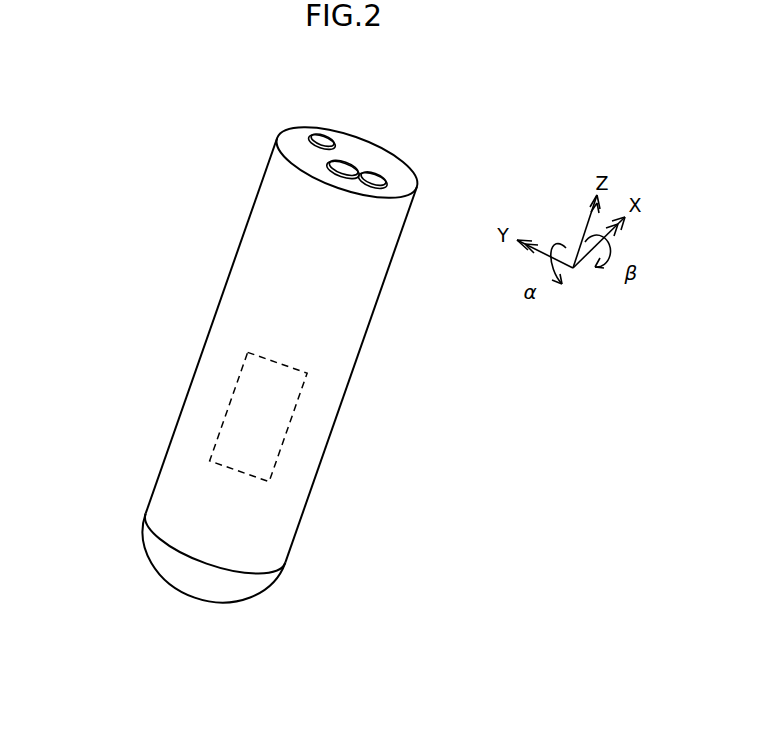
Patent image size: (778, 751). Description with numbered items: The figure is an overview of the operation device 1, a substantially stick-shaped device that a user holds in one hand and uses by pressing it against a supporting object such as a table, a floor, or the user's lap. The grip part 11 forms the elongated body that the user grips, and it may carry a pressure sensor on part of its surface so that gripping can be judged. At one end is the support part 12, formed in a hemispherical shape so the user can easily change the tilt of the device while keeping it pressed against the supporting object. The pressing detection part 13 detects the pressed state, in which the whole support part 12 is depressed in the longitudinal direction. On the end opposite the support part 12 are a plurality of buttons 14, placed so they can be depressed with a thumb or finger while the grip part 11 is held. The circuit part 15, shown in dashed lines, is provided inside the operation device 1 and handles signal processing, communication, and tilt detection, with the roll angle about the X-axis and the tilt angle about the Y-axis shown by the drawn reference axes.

The operation device 1 is at (440, 466).
The grip part 11 is at (338, 334).
The support part 12 is at (240, 601).
The pressing detection part 13 is at (157, 548).
The buttons 14 is at (352, 147).
The circuit part 15 is at (230, 405).